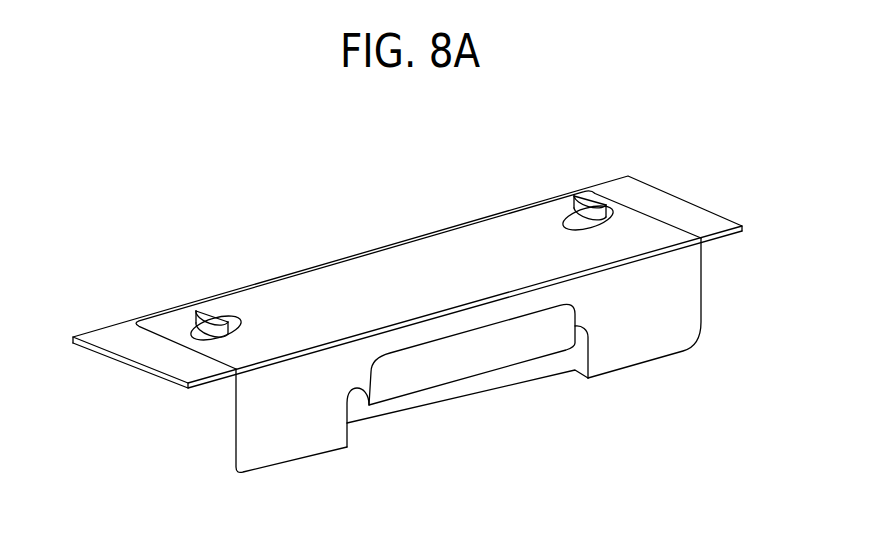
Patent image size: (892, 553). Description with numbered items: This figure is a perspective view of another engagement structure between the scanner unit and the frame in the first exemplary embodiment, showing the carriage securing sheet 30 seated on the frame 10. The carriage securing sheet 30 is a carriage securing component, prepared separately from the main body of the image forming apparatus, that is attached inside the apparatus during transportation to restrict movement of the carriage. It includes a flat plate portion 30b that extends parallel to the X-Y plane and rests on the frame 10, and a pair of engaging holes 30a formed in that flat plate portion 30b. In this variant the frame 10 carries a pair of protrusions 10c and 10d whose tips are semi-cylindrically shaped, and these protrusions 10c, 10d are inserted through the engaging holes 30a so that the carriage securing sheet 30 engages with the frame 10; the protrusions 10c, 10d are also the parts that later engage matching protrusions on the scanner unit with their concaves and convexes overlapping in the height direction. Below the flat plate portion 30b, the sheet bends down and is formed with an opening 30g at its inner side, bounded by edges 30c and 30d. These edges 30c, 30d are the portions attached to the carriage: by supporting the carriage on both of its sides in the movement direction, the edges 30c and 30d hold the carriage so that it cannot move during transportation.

The frame 10 is at (407, 264).
The protrusion 10c is at (579, 194).
The protrusion 10d is at (215, 308).
The carriage securing sheet 30 is at (447, 347).
The engaging hole 30a is at (246, 325).
The flat plate portion 30b is at (400, 262).
The edge 30c is at (577, 363).
The edge 30d is at (349, 417).
The opening 30g is at (483, 440).